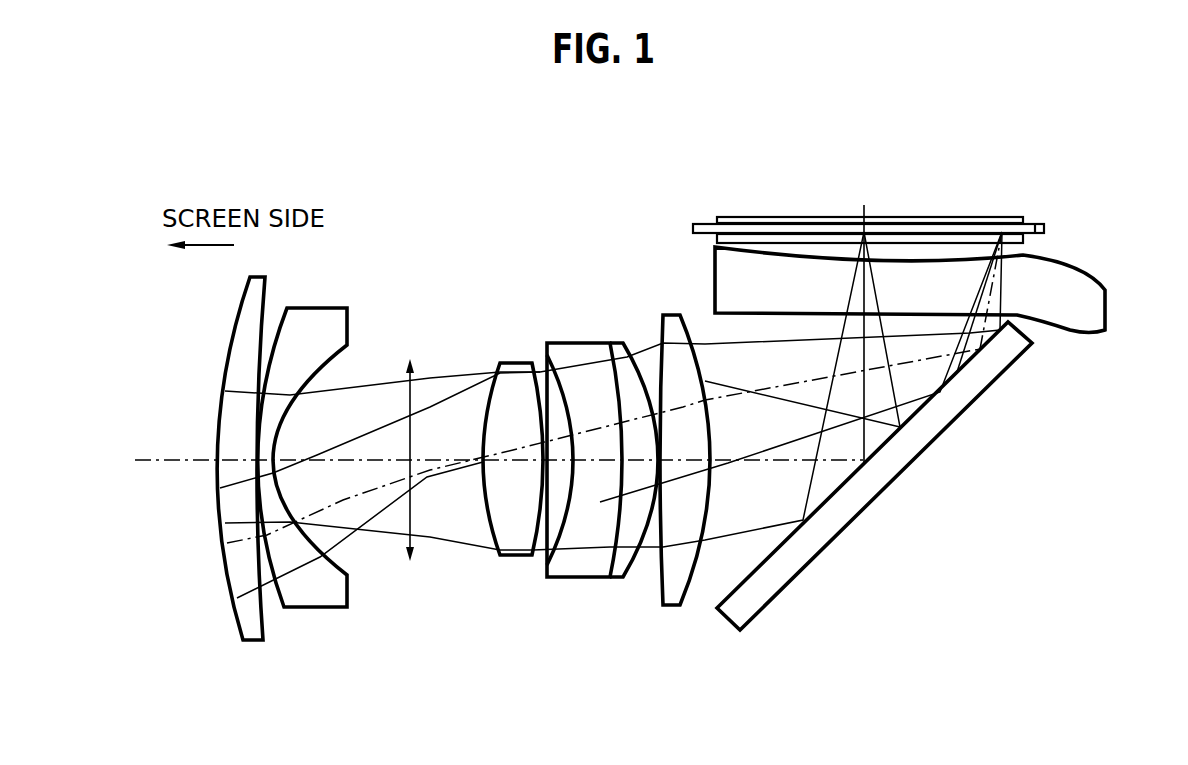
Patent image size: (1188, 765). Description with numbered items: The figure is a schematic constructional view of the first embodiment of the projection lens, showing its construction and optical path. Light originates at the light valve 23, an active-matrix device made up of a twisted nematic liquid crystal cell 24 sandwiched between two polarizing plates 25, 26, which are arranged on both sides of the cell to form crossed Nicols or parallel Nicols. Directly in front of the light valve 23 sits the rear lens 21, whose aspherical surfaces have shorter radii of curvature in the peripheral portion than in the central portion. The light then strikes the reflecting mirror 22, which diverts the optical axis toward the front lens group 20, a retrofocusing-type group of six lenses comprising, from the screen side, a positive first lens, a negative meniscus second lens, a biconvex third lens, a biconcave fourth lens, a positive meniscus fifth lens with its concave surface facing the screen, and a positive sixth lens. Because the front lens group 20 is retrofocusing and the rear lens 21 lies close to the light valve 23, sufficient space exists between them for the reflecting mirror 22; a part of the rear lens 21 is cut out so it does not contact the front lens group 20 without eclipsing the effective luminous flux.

The front lens group 20 is at (686, 668).
The rear lens 21 is at (1106, 303).
The reflecting mirror 22 is at (985, 377).
The light valve 23 is at (852, 200).
The liquid crystal cell 24 is at (695, 228).
The polarizing plate 25 is at (717, 219).
The polarizing plate 26 is at (717, 243).